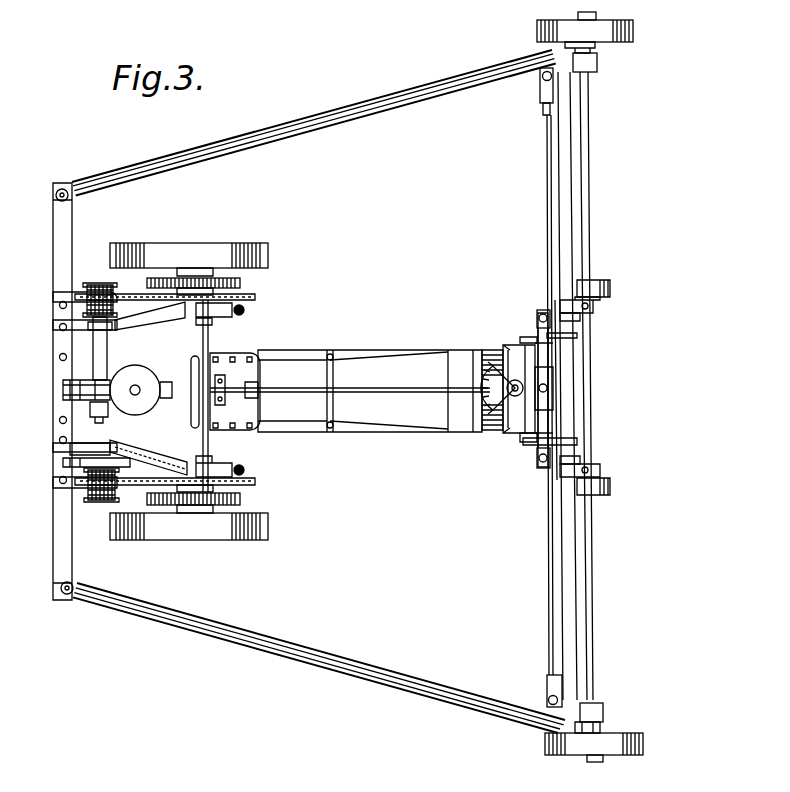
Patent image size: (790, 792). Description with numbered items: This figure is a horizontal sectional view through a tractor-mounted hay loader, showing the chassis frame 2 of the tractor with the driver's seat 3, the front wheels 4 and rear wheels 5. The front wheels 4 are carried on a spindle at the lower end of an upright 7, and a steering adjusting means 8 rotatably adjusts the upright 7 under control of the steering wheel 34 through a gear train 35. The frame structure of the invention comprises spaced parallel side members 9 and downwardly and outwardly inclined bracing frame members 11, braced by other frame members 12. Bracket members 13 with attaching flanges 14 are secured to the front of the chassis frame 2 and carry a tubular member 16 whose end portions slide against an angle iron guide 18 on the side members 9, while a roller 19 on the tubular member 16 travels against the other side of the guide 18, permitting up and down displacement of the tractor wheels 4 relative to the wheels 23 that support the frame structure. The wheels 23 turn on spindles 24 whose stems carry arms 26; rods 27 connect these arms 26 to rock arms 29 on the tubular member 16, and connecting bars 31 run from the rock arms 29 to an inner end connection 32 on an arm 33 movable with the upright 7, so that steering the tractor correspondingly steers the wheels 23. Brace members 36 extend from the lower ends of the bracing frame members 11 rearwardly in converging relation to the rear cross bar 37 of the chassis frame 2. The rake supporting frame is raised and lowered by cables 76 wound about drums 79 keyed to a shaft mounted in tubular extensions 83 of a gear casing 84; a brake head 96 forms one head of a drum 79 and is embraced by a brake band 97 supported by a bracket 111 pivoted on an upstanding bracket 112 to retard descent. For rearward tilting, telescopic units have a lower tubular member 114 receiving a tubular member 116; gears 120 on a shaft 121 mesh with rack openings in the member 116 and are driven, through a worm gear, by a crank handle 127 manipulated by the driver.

The chassis frame 2 is at (348, 349).
The driver's seat 3 is at (143, 378).
The front wheels 4 is at (483, 352).
The rear wheels 5 is at (220, 258).
The upright 7 is at (406, 363).
The steering adjusting means 8 is at (510, 345).
The side members 9 is at (605, 286).
The bracing frame members 11 is at (597, 60).
The frame members 12 is at (565, 188).
The bracket members 13 is at (577, 336).
The attaching flanges 14 is at (536, 330).
The tubular member 16 is at (560, 348).
The angle iron guide 18 is at (593, 305).
The roller 19 is at (590, 313).
The wheels 23 is at (635, 32).
The spindles 24 is at (600, 728).
The arms 26 is at (550, 62).
The rods 27 is at (546, 167).
The rock arms 29 is at (540, 312).
The connecting bars 31 is at (577, 339).
The inner end connection 32 is at (548, 390).
The arm 33 is at (548, 376).
The steering wheel 34 is at (213, 367).
The gear train 35 is at (492, 410).
The brace members 36 is at (362, 104).
The rear cross bar 37 is at (66, 223).
The cables 76 is at (246, 297).
The drums 79 is at (96, 283).
The tubular extensions 83 is at (104, 344).
The gear casing 84 is at (88, 383).
The brake head 96 is at (78, 478).
The brake band 97 is at (72, 445).
The bracket 111 is at (64, 463).
The upstanding bracket 112 is at (75, 447).
The lower tubular member 114 is at (244, 308).
The tubular member 116 is at (245, 312).
The gears 120 is at (215, 296).
The shaft 121 is at (212, 338).
The crank handle 127 is at (188, 440).